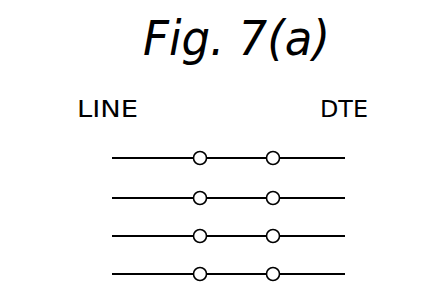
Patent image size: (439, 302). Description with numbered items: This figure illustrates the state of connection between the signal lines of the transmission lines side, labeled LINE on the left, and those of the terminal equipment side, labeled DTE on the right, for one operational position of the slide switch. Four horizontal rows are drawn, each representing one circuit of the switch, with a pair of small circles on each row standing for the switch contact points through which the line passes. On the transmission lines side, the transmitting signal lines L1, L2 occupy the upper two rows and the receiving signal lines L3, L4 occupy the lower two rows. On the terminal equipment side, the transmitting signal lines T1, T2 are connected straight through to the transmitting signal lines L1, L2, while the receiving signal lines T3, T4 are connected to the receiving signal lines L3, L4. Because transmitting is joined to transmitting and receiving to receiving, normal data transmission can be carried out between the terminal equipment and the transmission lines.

The transmitting signal line L1 is at (228, 150).
The transmitting signal line L2 is at (228, 191).
The receiving signal line L3 is at (228, 228).
The receiving signal line L4 is at (228, 265).
The transmitting signal line T1 is at (315, 145).
The transmitting signal line T2 is at (315, 185).
The receiving signal line T3 is at (315, 222).
The receiving signal line T4 is at (315, 260).